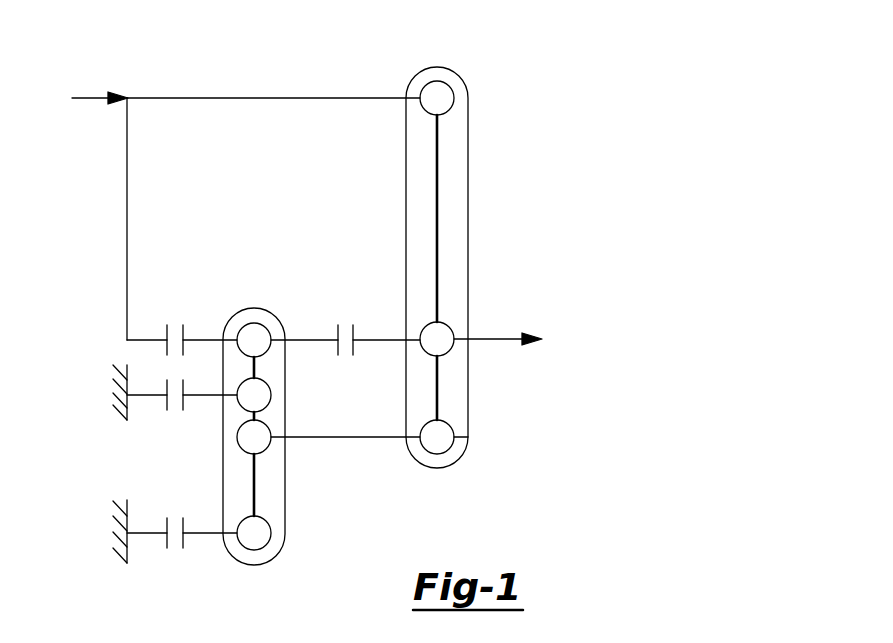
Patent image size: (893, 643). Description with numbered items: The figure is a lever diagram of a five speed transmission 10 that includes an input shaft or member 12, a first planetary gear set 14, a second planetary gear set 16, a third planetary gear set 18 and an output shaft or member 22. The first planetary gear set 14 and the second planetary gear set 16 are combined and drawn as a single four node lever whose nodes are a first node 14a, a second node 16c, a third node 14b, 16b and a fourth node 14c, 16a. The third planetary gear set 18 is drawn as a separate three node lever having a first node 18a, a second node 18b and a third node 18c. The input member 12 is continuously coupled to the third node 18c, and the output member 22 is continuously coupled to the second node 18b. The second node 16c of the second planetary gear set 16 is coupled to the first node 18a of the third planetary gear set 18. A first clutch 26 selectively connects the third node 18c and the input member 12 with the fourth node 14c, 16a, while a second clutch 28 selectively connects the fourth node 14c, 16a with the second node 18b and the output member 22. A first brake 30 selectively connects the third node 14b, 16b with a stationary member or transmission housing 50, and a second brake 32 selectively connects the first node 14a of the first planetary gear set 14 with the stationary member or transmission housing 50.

The transmission 10 is at (485, 55).
The input shaft or member 12 is at (85, 97).
The first planetary gear set 14 is at (241, 284).
The second planetary gear set 16 is at (280, 401).
The first node 14a is at (262, 535).
The third node 14b is at (262, 393).
The fourth node 14c is at (257, 336).
The fourth node 16a is at (284, 297).
The third node 16b is at (325, 396).
The second node 16c is at (258, 445).
The third planetary gear set 18 is at (446, 484).
The first node 18a is at (442, 437).
The second node 18b is at (440, 334).
The third node 18c is at (442, 98).
The output shaft or member 22 is at (492, 341).
The first clutch 26 is at (178, 323).
The second clutch 28 is at (343, 322).
The first brake 30 is at (178, 412).
The second brake 32 is at (178, 550).
The stationary member or transmission housing 50 is at (125, 418).